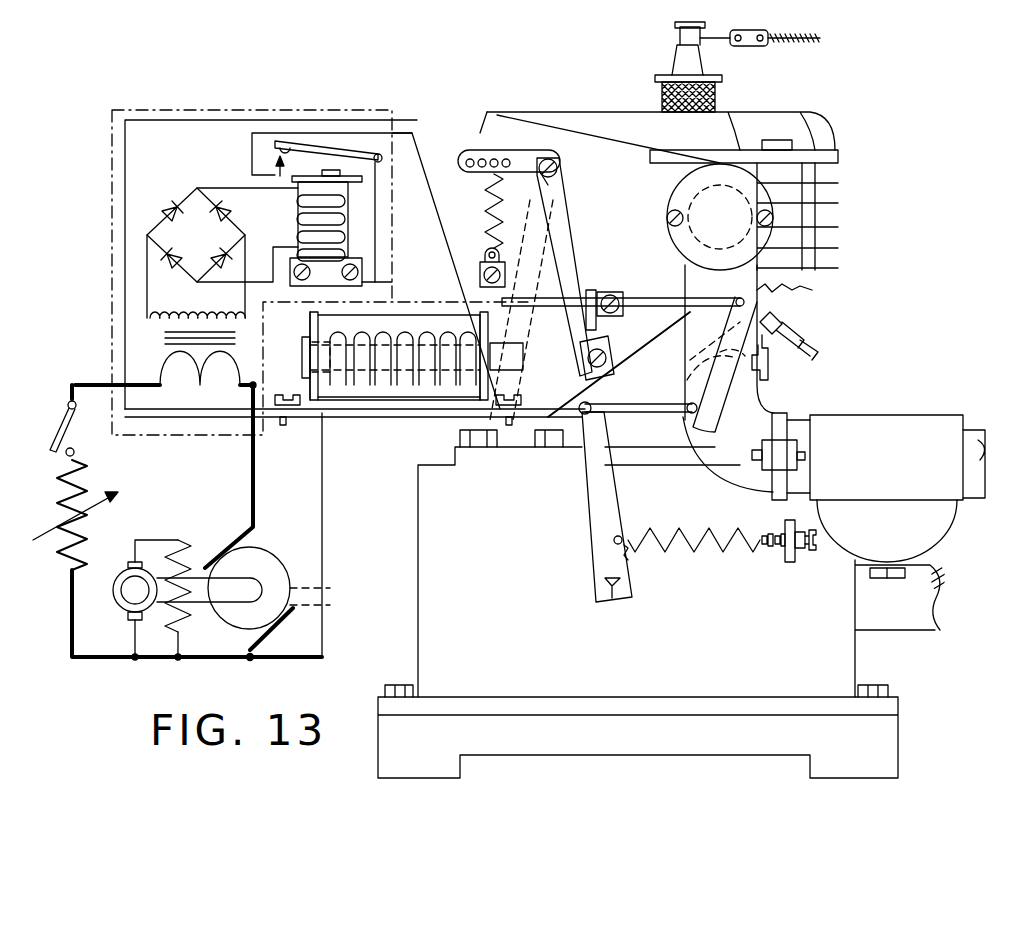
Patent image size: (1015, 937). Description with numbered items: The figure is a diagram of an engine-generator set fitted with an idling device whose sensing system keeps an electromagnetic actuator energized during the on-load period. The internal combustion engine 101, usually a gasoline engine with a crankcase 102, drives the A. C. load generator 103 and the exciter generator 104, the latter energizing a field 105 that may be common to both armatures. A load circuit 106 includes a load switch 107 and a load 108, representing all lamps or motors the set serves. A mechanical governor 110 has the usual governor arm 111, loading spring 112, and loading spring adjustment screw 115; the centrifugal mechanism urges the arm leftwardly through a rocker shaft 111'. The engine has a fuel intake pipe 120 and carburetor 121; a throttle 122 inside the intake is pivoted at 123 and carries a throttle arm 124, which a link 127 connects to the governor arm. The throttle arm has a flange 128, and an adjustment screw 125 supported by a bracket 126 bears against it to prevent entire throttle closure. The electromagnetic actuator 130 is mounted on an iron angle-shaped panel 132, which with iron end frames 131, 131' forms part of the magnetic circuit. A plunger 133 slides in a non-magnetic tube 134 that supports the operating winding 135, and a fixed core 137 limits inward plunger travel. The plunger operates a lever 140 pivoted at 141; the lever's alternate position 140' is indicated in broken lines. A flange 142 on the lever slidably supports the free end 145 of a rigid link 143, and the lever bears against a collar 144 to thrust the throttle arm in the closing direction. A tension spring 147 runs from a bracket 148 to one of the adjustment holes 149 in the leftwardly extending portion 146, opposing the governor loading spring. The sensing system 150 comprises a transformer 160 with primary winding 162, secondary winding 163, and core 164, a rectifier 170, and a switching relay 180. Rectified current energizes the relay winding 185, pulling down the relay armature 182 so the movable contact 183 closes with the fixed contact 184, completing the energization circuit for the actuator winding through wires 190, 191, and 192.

The internal combustion engine 101 is at (900, 135).
The crankcase 102 is at (596, 705).
The A. C. load generator 103 is at (262, 575).
The exciter generator 104 is at (125, 610).
The field 105 is at (190, 628).
The load circuit 106 is at (253, 476).
The load switch 107 is at (58, 416).
The load 108 is at (88, 488).
The mechanical governor 110 is at (568, 573).
The governor arm 111 is at (625, 507).
The rocker shaft 111' is at (619, 607).
The loading spring 112 is at (690, 548).
The loading spring adjustment screw 115 is at (770, 548).
The fuel intake pipe 120 is at (760, 475).
The carburetor 121 is at (892, 425).
The throttle 122 is at (690, 370).
The throttle pivot 123 is at (700, 350).
The throttle arm 124 is at (752, 396).
The adjustment screw 125 is at (778, 318).
The bracket 126 is at (770, 350).
The link 127 is at (647, 412).
The flange 128 is at (815, 288).
The electromagnetic actuator 130 is at (396, 440).
The iron end frame 131 is at (526, 357).
The iron end frame 131' is at (289, 353).
The panel 132 is at (445, 132).
The plunger 133 is at (619, 364).
The tube 134 is at (506, 372).
The operating winding 135 is at (465, 388).
The fixed core 137 is at (303, 368).
The lever 140 is at (582, 267).
The lever alternate position 140' is at (562, 310).
The pivot 141 is at (560, 168).
The flange 142 is at (602, 325).
The rigid link 143 is at (684, 300).
The collar 144 is at (612, 282).
The free end 145 is at (555, 298).
The leftwardly extending portion 146 is at (528, 160).
The tension spring 147 is at (487, 205).
The bracket 148 is at (485, 256).
The adjustment holes 149 is at (486, 142).
The sensing system 150 is at (112, 258).
The transformer 160 is at (110, 333).
The primary winding 162 is at (164, 375).
The secondary winding 163 is at (202, 312).
The core 164 is at (168, 338).
The rectifier 170 is at (190, 195).
The switching relay 180 is at (438, 218).
The relay armature 182 is at (352, 141).
The movable switching contact 183 is at (280, 148).
The fixed contact 184 is at (278, 160).
The operating winding 185 is at (298, 212).
The wire 190 is at (392, 282).
The wire 191 is at (456, 262).
The wire 192 is at (322, 518).